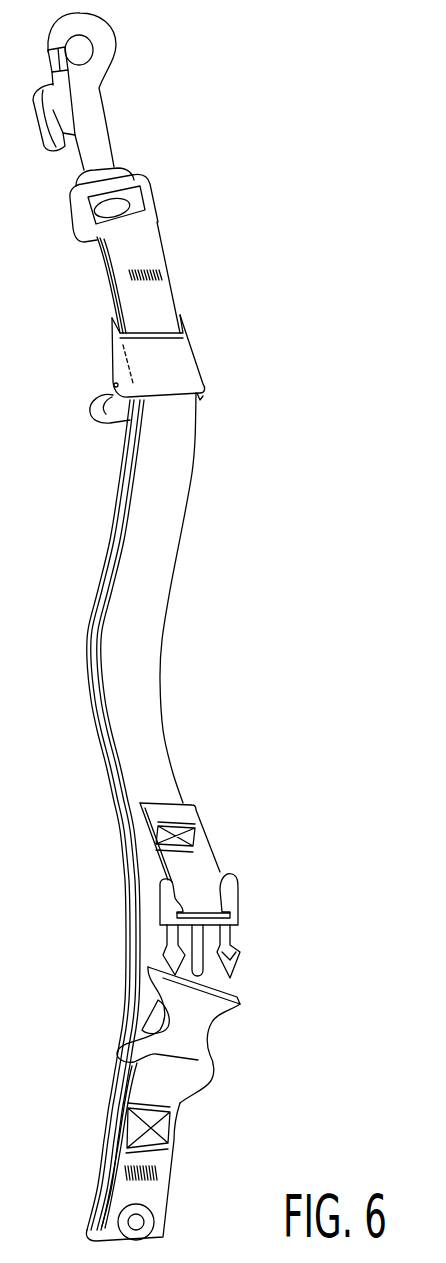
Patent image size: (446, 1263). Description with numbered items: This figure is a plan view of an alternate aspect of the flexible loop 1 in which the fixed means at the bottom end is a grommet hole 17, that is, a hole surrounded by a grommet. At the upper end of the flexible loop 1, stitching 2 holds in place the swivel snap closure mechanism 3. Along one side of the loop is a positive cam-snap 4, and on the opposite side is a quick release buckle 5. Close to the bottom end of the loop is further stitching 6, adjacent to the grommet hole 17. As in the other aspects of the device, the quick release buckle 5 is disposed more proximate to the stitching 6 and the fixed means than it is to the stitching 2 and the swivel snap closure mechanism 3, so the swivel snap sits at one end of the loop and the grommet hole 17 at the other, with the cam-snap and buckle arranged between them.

The flexible loop 1 is at (158, 590).
The stitching 2 is at (163, 273).
The swivel snap closure mechanism 3 is at (160, 186).
The positive cam-snap 4 is at (183, 367).
The quick release buckle 5 is at (226, 1008).
The stitching 6 is at (160, 1173).
The grommet hole 17 is at (147, 1224).